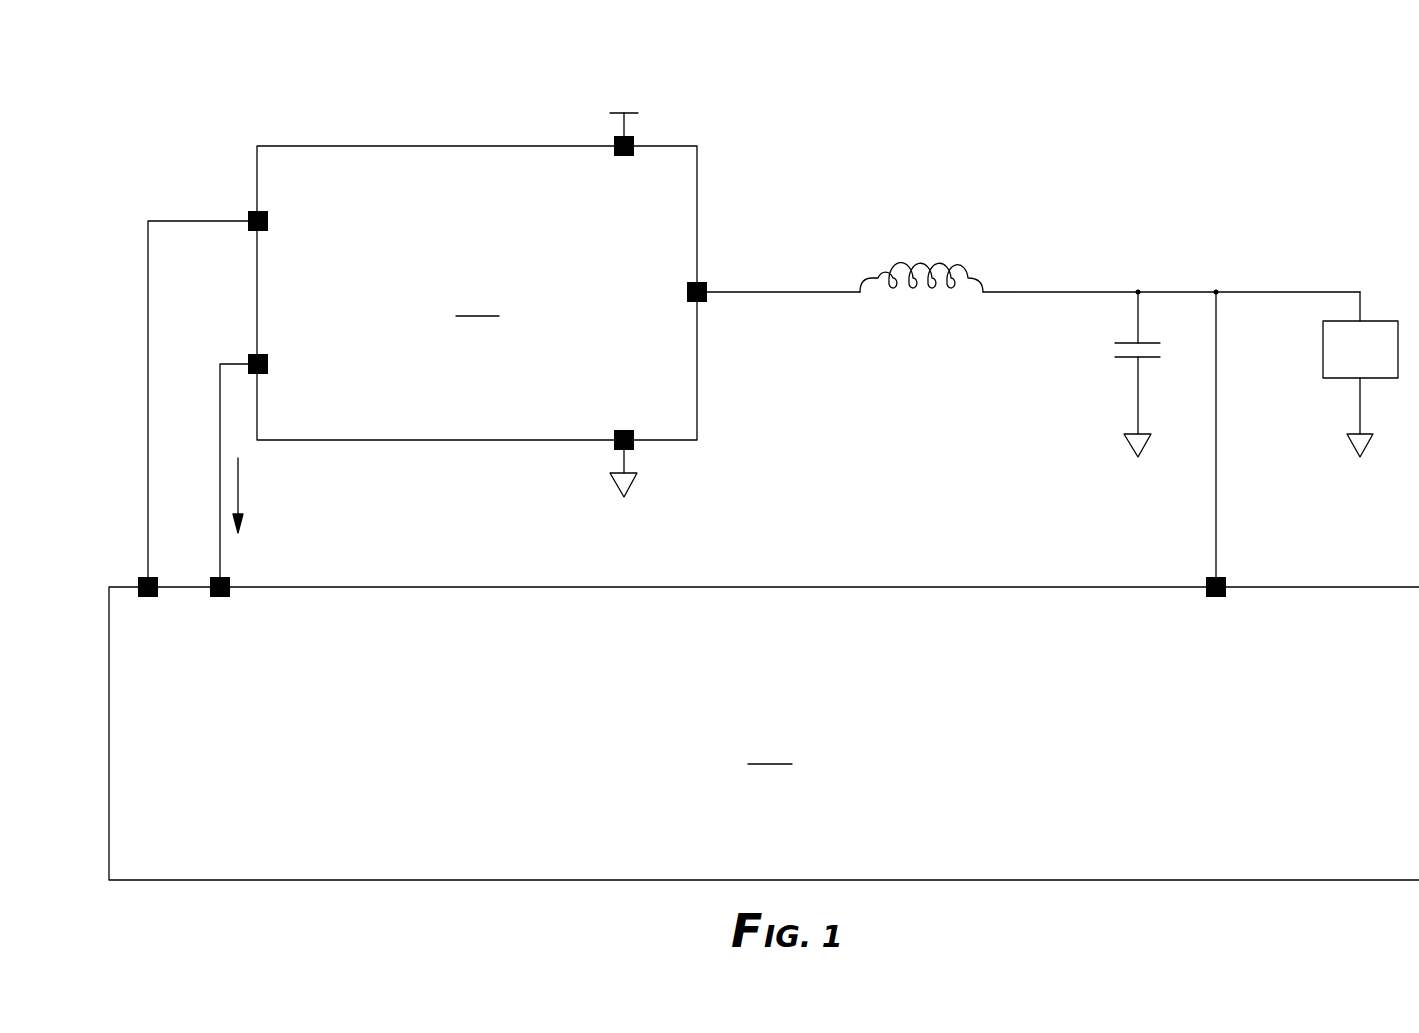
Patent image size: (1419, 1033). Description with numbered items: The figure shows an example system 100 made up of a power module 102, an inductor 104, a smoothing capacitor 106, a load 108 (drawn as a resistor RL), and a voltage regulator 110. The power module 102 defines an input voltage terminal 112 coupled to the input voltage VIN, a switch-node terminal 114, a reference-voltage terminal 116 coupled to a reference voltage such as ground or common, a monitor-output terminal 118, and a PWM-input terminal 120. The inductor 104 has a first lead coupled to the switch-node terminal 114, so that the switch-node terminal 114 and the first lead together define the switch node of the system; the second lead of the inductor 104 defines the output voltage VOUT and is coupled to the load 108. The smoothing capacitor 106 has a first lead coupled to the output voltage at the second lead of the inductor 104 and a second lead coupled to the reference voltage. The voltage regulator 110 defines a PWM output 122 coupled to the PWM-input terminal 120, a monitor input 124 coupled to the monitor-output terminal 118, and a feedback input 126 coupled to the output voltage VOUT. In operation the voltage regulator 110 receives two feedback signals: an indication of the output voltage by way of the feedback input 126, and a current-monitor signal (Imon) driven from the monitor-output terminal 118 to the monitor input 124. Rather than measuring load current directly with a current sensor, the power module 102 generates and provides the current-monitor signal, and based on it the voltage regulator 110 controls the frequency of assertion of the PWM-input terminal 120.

The system 100 is at (157, 76).
The power module 102 is at (277, 145).
The inductor 104 is at (955, 255).
The smoothing capacitor 106 is at (1105, 365).
The load 108 is at (1318, 370).
The voltage regulator 110 is at (764, 733).
The input voltage terminal 112 is at (636, 141).
The switch-node terminal 114 is at (708, 283).
The reference-voltage terminal 116 is at (634, 446).
The monitor-output terminal 118 is at (249, 357).
The PWM-input terminal 120 is at (247, 212).
The PWM output 122 is at (138, 578).
The monitor input 124 is at (232, 580).
The feedback input 126 is at (1207, 579).